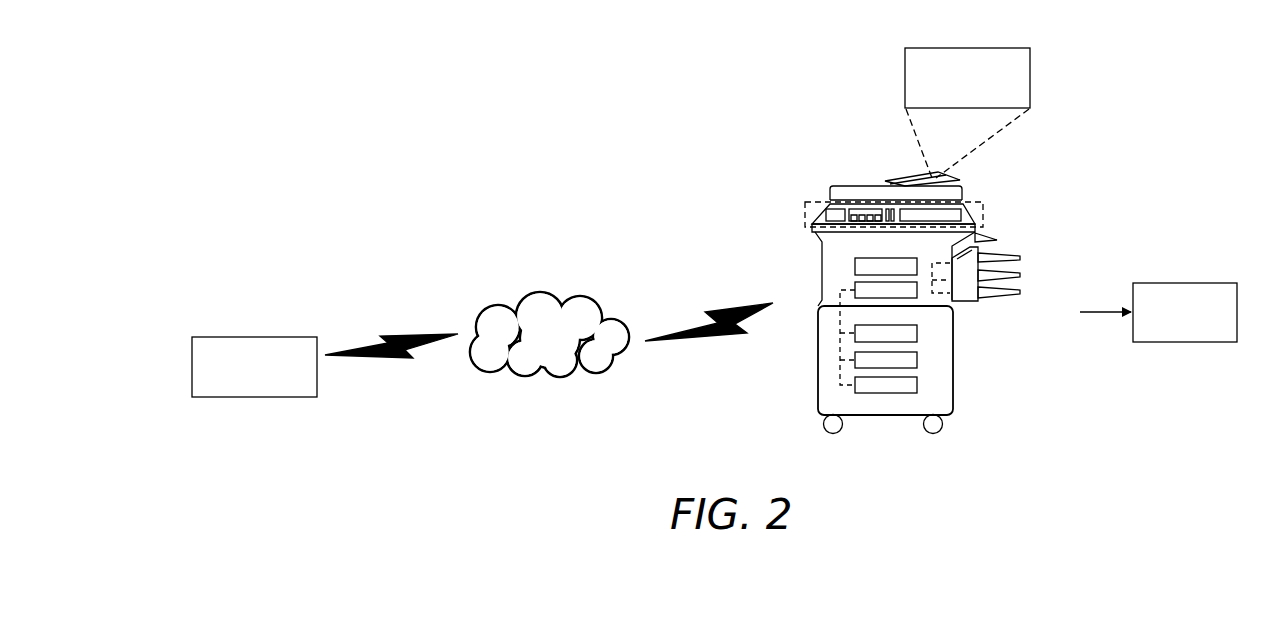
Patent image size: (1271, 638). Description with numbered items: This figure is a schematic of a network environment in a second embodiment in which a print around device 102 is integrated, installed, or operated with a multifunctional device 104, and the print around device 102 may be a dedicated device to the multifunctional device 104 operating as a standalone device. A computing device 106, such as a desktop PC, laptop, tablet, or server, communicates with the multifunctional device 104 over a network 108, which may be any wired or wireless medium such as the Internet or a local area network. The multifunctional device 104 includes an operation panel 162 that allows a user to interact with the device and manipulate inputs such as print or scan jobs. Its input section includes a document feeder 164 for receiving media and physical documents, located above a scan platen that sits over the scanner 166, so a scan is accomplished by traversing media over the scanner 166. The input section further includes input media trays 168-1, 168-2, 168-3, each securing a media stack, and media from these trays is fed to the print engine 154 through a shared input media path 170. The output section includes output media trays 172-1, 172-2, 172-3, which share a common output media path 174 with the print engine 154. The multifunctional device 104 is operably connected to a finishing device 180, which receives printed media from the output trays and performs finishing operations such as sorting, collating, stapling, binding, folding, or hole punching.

The print around device 102 is at (980, 48).
The multifunctional device 104 is at (742, 172).
The computing device 106 is at (262, 337).
The network 108 is at (566, 349).
The print engine 154 is at (857, 291).
The operation panel 162 is at (806, 211).
The document feeder 164 is at (890, 179).
The scanner 166 is at (857, 261).
The input media tray 168-1 is at (918, 333).
The input media tray 168-2 is at (918, 360).
The input media tray 168-3 is at (918, 385).
The input media path 170 is at (840, 346).
The output media tray 172-1 is at (1013, 257).
The output media tray 172-2 is at (1013, 281).
The output media tray 172-3 is at (1010, 289).
The output media path 174 is at (927, 290).
The finishing device 180 is at (1190, 283).